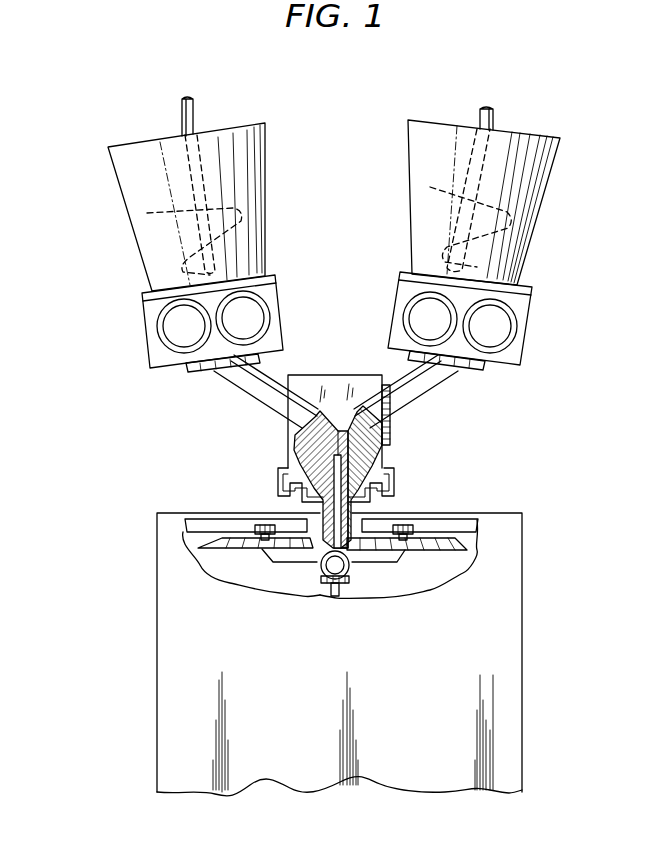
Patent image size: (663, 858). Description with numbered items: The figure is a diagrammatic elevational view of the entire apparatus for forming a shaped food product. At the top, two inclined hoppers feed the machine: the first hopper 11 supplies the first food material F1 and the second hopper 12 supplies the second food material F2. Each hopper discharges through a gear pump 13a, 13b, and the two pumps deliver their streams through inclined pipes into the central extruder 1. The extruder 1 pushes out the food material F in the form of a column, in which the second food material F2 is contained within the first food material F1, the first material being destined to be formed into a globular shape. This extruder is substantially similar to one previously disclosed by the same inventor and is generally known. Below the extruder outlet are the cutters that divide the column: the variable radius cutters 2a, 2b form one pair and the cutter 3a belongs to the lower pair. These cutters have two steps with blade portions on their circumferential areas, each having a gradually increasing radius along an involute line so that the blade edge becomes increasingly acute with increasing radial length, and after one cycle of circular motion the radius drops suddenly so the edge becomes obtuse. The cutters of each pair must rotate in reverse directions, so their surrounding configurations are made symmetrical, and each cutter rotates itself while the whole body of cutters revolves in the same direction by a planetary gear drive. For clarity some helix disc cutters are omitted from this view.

The extruder 1 is at (230, 407).
The first hopper 11 is at (556, 162).
The second hopper 12 is at (118, 177).
The gear pump 13a is at (172, 332).
The gear pump 13b is at (500, 327).
The variable radius cutter 2a is at (223, 550).
The variable radius cutter 2b is at (445, 550).
The variable radius cutter 3a is at (383, 558).
The food material F is at (306, 511).
The first food material F1 is at (313, 550).
The second food material F2 is at (343, 513).